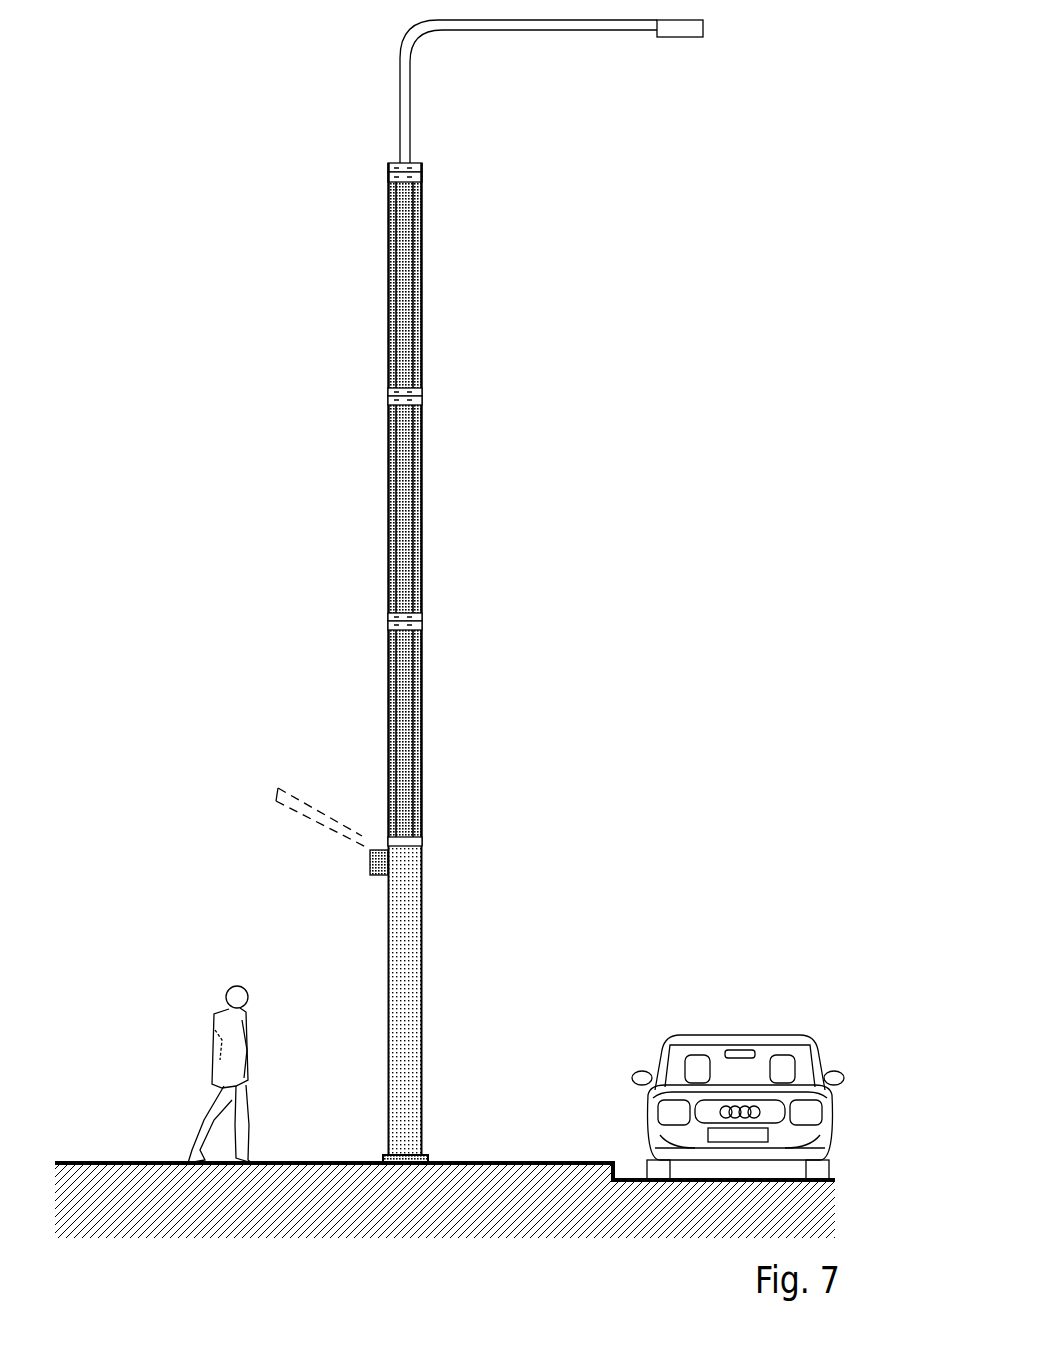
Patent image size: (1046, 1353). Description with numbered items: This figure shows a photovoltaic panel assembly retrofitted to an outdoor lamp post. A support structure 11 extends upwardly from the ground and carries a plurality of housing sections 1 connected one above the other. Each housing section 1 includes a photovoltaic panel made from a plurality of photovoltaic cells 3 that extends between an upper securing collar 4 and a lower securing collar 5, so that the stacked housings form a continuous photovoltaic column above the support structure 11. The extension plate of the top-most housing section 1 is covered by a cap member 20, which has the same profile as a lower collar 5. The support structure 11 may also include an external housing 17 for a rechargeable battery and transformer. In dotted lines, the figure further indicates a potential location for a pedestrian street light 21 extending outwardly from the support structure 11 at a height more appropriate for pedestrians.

The cap member 20 is at (421, 165).
The housing section 1 is at (423, 229).
The lower securing collar 5 is at (422, 387).
The upper securing collar 4 is at (423, 407).
The photovoltaic cells 3 is at (410, 643).
The pedestrian street light 21 is at (363, 813).
The external housing 17 is at (386, 858).
The support structure 11 is at (407, 1010).